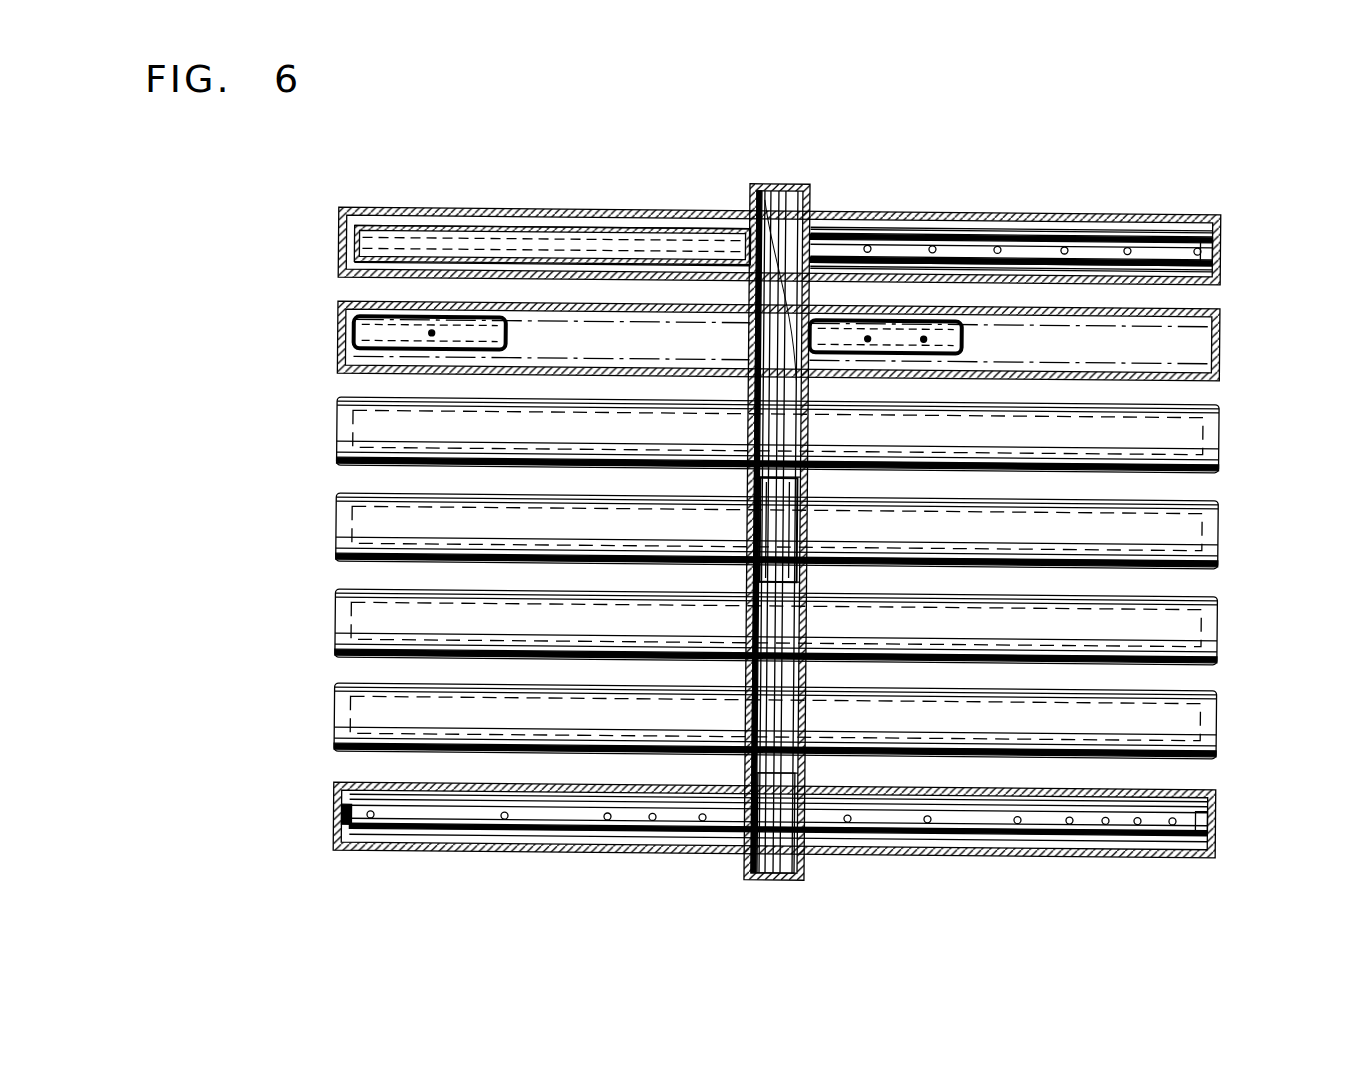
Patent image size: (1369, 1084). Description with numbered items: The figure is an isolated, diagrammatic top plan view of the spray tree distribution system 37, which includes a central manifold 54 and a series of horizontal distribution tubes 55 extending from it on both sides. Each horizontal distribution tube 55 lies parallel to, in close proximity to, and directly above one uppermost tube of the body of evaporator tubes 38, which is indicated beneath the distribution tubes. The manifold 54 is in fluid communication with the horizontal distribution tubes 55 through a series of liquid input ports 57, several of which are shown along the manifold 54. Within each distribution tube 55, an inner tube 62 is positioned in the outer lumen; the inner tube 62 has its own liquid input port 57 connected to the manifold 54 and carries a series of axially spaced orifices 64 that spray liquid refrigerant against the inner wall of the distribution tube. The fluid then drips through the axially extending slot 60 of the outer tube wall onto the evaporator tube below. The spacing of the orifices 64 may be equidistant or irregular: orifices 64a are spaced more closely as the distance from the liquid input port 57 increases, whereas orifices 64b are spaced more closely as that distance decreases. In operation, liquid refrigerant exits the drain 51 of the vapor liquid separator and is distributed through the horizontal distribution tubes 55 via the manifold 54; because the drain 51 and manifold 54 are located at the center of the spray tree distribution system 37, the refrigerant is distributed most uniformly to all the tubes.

The spray tree distribution system 37 is at (1112, 201).
The body of evaporator tubes 38 is at (1250, 465).
The drain 51 is at (790, 506).
The manifold 54 is at (786, 191).
The horizontal distribution tube 55 is at (338, 244).
The liquid input port 57 is at (770, 191).
The axially extending slot 60 is at (598, 240).
The inner tube 62 is at (338, 329).
The orifices 64 is at (995, 245).
The orifices 64a is at (852, 821).
The orifices 64b is at (376, 820).